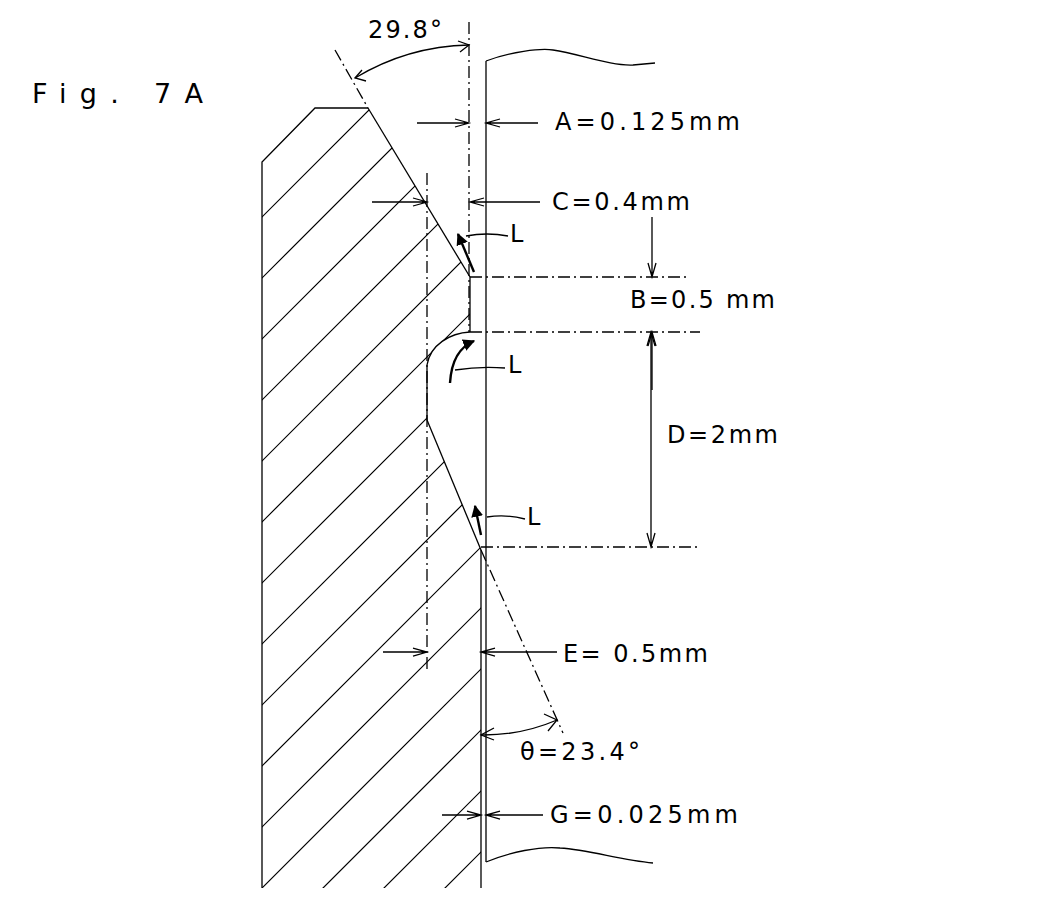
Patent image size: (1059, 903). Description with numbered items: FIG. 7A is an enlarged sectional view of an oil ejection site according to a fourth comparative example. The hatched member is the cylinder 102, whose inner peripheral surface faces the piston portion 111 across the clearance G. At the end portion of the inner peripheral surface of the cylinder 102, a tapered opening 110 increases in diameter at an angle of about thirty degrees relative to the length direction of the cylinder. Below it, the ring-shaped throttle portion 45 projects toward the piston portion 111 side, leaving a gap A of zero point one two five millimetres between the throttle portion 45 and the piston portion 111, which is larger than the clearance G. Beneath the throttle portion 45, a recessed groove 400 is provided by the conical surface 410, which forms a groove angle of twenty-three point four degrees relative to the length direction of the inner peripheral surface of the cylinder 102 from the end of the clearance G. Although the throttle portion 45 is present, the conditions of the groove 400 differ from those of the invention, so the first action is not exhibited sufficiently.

The cylinder 102 is at (264, 289).
The tapered opening 110 is at (374, 118).
The piston portion 111 is at (540, 62).
The throttle portion 45 is at (470, 305).
The recessed groove 400 is at (427, 403).
The conical surface 410 is at (445, 472).